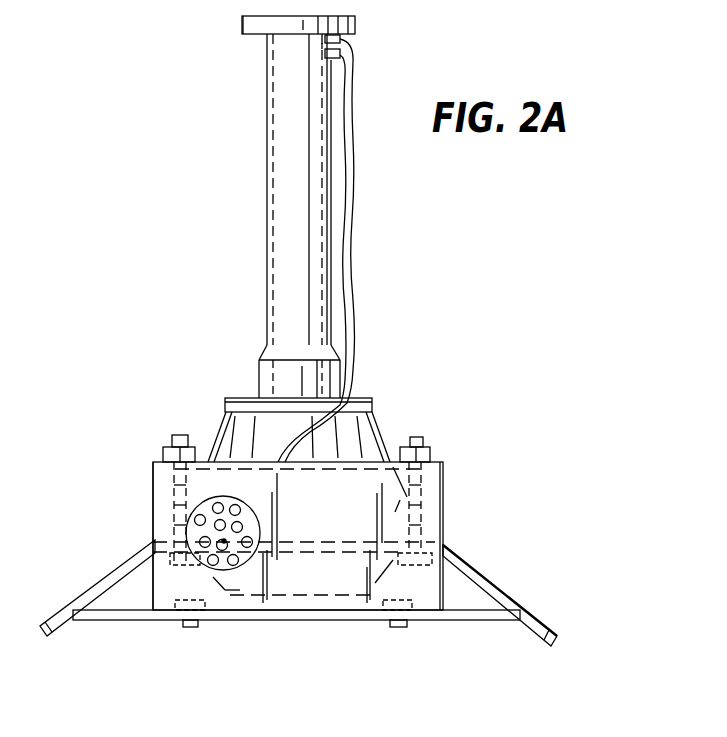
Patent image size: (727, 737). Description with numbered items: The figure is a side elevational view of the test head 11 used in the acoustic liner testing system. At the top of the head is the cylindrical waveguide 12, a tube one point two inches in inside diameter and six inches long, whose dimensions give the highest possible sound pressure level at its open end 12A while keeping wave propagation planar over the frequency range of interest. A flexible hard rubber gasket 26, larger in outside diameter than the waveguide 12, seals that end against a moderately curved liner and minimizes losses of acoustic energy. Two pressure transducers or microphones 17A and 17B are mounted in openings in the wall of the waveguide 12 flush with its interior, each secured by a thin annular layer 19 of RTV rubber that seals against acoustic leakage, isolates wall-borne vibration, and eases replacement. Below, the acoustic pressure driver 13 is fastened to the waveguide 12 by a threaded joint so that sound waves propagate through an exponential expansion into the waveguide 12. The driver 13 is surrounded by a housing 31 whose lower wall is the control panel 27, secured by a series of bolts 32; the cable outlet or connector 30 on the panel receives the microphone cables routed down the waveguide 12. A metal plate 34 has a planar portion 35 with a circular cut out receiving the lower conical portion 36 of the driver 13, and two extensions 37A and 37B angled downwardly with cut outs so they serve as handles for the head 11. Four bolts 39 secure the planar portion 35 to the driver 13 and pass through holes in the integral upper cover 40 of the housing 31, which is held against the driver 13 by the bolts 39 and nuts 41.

The test head 11 is at (238, 188).
The cylindrical waveguide 12 is at (343, 297).
The open end 12A is at (316, 16).
The acoustic pressure driver 13 is at (394, 434).
The pressure transducer or microphone 17A is at (342, 40).
The pressure transducer or microphone 17B is at (346, 62).
The thin annular layer of RTV rubber 19 is at (325, 50).
The flexible hard rubber gasket 26 is at (246, 52).
The control panel 27 is at (470, 628).
The cable outlet or connector 30 is at (242, 578).
The housing 31 is at (443, 507).
The bolts 32 is at (178, 607).
The metal plate 34 is at (510, 582).
The planar portion 35 is at (338, 536).
The lower conical portion 36 is at (330, 590).
The extension 37A is at (56, 622).
The extension 37B is at (546, 626).
The bolts 39 is at (177, 430).
The integral upper cover 40 is at (155, 462).
The nuts 41 is at (172, 438).